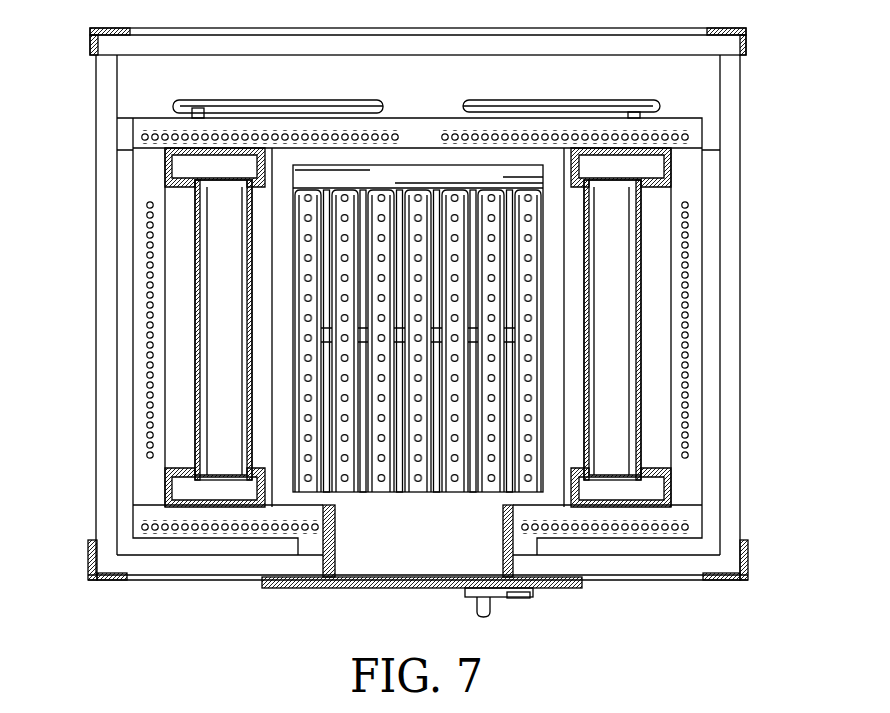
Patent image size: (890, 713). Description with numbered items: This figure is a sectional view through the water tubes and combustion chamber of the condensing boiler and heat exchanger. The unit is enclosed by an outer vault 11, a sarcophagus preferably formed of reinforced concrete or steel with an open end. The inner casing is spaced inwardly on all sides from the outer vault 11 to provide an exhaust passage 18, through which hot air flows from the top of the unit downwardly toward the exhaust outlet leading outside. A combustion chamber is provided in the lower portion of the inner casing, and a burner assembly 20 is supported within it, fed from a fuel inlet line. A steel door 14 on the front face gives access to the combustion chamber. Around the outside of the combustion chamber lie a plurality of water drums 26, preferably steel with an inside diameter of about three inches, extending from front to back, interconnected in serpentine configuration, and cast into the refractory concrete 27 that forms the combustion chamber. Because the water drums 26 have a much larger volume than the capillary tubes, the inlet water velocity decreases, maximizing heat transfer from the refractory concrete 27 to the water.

The outer vault 11 is at (733, 325).
The steel door 14 is at (345, 590).
The exhaust passage 18 is at (708, 440).
The burner assembly 20 is at (303, 486).
The water drums 26 is at (217, 310).
The refractory concrete 27 is at (660, 237).